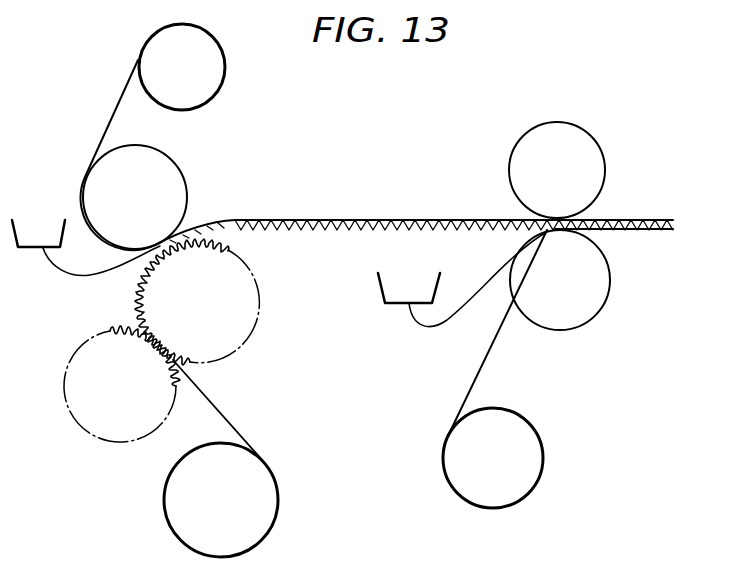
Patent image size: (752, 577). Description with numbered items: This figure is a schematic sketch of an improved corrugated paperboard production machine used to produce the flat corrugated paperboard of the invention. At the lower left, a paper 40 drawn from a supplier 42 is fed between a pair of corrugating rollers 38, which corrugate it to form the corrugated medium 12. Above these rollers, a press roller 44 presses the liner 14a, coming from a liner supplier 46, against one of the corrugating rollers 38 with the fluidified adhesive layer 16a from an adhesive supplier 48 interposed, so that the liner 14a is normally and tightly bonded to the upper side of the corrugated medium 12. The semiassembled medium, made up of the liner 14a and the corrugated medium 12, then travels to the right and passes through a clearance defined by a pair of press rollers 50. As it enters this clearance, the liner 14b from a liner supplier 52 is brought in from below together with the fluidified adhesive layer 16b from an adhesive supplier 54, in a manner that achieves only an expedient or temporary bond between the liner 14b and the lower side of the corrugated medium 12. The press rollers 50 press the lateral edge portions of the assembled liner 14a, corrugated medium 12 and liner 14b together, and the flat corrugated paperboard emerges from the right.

The corrugated medium 12 is at (316, 222).
The liner 14a is at (117, 105).
The liner 14b is at (642, 232).
The fluidified adhesive layer 16a is at (82, 273).
The fluidified adhesive layer 16b is at (446, 327).
The corrugating rollers 38 is at (256, 303).
The paper 40 is at (225, 418).
The supplier 42 is at (270, 508).
The press roller 44 is at (172, 178).
The liner supplier 46 is at (214, 78).
The adhesive supplier 48 is at (58, 233).
The press rollers 50 is at (593, 162).
The liner supplier 52 is at (532, 473).
The adhesive supplier 54 is at (391, 288).